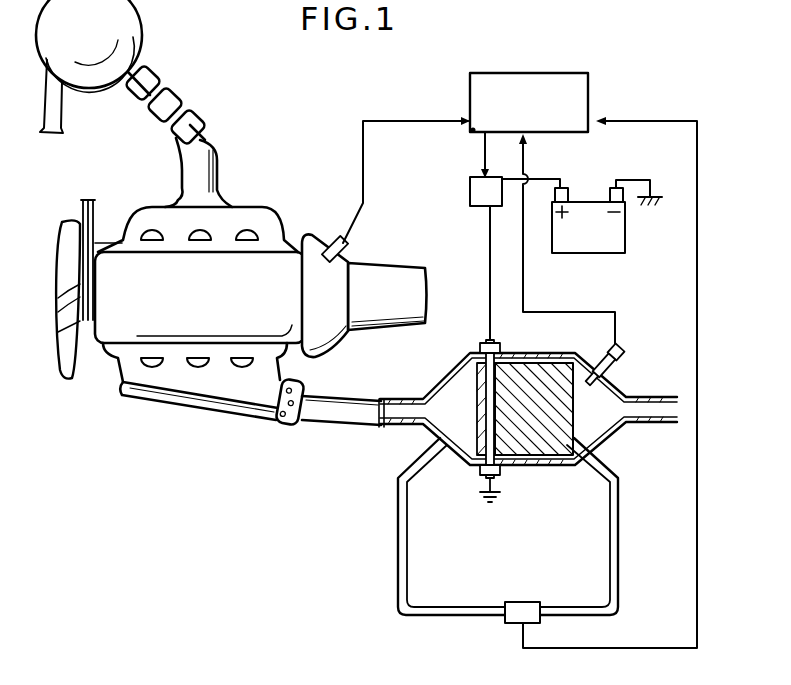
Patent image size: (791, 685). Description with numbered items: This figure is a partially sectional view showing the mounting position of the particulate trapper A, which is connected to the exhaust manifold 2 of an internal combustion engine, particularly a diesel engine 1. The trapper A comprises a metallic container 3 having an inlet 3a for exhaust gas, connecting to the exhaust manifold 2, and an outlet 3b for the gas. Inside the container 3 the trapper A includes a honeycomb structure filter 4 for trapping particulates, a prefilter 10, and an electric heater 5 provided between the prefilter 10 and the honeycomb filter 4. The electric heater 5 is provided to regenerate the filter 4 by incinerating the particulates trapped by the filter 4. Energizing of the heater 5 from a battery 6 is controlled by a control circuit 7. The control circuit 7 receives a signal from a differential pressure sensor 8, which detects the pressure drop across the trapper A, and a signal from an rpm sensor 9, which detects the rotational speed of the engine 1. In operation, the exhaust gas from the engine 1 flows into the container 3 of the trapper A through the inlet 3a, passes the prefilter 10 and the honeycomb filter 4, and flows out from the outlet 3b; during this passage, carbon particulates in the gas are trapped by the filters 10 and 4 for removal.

The diesel engine 1 is at (147, 332).
The exhaust manifold 2 is at (218, 392).
The metallic container 3 is at (577, 460).
The inlet 3a is at (468, 425).
The outlet 3b is at (605, 425).
The honeycomb structure filter 4 is at (553, 447).
The electric heater 5 is at (483, 433).
The battery 6 is at (606, 244).
The control circuit 7 is at (534, 118).
The differential pressure sensor 8 is at (505, 620).
The rpm sensor 9 is at (315, 237).
The prefilter 10 is at (477, 450).
The particulate trapper A is at (515, 466).